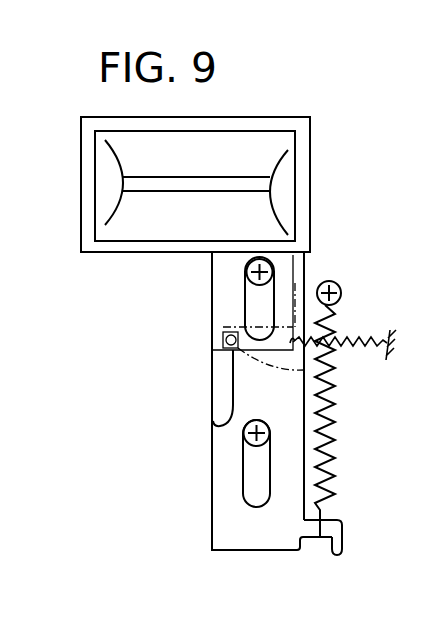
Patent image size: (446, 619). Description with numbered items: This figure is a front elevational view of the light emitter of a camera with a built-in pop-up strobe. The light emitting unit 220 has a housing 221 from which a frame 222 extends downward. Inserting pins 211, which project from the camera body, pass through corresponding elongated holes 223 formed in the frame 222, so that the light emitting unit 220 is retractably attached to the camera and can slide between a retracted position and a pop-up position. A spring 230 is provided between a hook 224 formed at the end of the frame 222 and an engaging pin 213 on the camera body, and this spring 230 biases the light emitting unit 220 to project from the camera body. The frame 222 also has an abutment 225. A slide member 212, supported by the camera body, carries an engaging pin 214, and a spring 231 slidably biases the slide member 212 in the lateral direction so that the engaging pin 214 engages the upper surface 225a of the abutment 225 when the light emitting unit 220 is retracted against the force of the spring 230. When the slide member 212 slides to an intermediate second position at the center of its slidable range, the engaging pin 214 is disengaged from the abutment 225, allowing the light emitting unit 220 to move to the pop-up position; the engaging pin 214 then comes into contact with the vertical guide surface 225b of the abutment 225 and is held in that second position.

The light emitting unit 220 is at (218, 155).
The housing 221 is at (310, 176).
The slide member 212 is at (300, 287).
The engaging pin 213 is at (340, 283).
The spring 231 is at (363, 330).
The engaging pin 214 is at (304, 370).
The spring 230 is at (337, 403).
The hook 224 is at (345, 545).
The inserting pins 211 is at (245, 258).
The elongated holes 223 is at (245, 305).
The upper surface 225a is at (212, 328).
The frame 222 is at (222, 340).
The abutment 225 is at (217, 412).
The vertical guide surface 225b is at (242, 430).